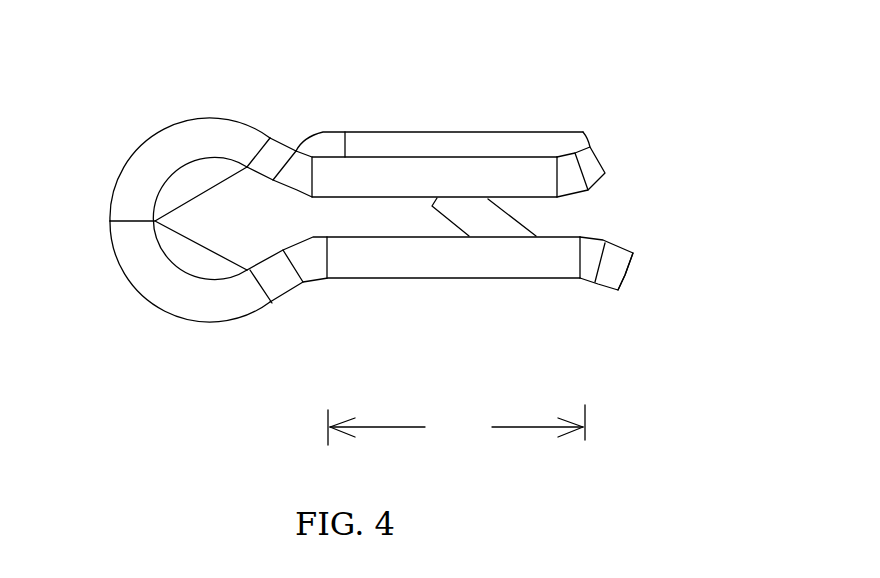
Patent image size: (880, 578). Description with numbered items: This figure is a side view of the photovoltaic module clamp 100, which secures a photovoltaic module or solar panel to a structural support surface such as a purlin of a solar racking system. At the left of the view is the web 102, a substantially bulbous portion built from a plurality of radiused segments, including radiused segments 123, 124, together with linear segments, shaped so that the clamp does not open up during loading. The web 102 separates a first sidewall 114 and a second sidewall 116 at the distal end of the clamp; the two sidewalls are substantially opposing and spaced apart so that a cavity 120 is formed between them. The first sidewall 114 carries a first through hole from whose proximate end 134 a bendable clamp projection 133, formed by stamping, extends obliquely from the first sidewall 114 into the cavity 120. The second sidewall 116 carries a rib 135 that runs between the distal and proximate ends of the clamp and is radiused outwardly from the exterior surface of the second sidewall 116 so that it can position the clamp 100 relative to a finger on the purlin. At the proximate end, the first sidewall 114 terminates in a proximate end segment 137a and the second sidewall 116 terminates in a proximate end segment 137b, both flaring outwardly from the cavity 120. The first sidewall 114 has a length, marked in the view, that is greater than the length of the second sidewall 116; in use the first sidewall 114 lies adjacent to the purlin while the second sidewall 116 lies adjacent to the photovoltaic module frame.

The photovoltaic module clamp 100 is at (623, 62).
The web 102 is at (184, 232).
The first sidewall 114 is at (460, 262).
The second sidewall 116 is at (393, 165).
The cavity 120 is at (393, 229).
The radiused segment 123 is at (196, 310).
The radiused segment 124 is at (139, 167).
The clamp projection 133 is at (508, 233).
The proximate end 134 is at (627, 277).
The rib 135 is at (466, 143).
The proximate end segment 137a is at (620, 288).
The proximate end segment 137b is at (603, 176).